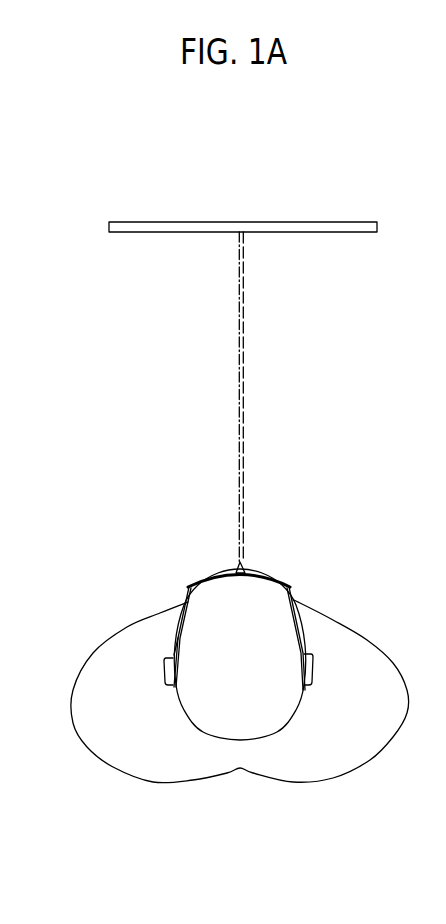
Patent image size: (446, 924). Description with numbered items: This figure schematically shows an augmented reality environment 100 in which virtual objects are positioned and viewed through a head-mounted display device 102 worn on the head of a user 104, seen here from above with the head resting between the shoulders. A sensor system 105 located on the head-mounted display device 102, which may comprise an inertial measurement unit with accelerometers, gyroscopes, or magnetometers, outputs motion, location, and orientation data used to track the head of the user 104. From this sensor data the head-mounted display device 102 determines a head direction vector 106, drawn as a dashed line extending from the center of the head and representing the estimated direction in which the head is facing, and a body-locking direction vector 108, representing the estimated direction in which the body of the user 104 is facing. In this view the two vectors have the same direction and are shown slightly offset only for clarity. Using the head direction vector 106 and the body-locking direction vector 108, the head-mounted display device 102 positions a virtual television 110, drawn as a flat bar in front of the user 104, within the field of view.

The augmented reality environment 100 is at (99, 88).
The head-mounted display device 102 is at (280, 580).
The user 104 is at (372, 642).
The sensor system 105 is at (173, 631).
The head direction vector 106 is at (244, 401).
The body-locking direction vector 108 is at (239, 423).
The virtual television 110 is at (345, 222).